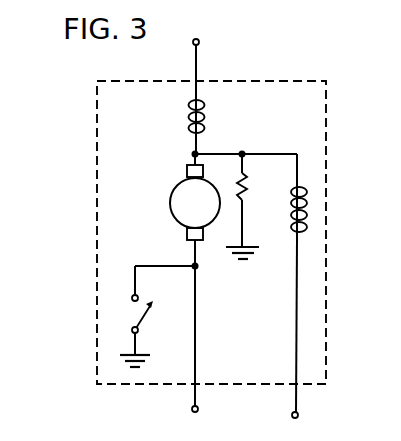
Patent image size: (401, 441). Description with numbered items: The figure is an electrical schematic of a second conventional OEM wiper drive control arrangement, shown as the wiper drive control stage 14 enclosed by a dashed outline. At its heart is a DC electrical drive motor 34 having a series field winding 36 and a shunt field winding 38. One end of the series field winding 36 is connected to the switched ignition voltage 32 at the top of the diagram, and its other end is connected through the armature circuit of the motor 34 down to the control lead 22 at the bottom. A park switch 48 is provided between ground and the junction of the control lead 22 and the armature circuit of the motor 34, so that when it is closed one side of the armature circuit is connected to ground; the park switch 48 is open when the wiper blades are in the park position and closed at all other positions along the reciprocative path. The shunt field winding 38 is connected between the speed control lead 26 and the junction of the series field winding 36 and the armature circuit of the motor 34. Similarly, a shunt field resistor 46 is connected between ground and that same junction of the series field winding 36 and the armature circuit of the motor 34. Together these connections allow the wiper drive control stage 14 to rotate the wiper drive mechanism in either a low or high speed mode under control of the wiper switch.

The wiper drive control stage 14 is at (97, 192).
The control lead 22 is at (192, 408).
The speed control lead 26 is at (292, 413).
The switched ignition voltage 32 is at (199, 41).
The DC electrical drive motor 34 is at (170, 197).
The series field winding 36 is at (204, 114).
The shunt field winding 38 is at (311, 205).
The shunt field resistor 46 is at (245, 201).
The park switch 48 is at (131, 312).